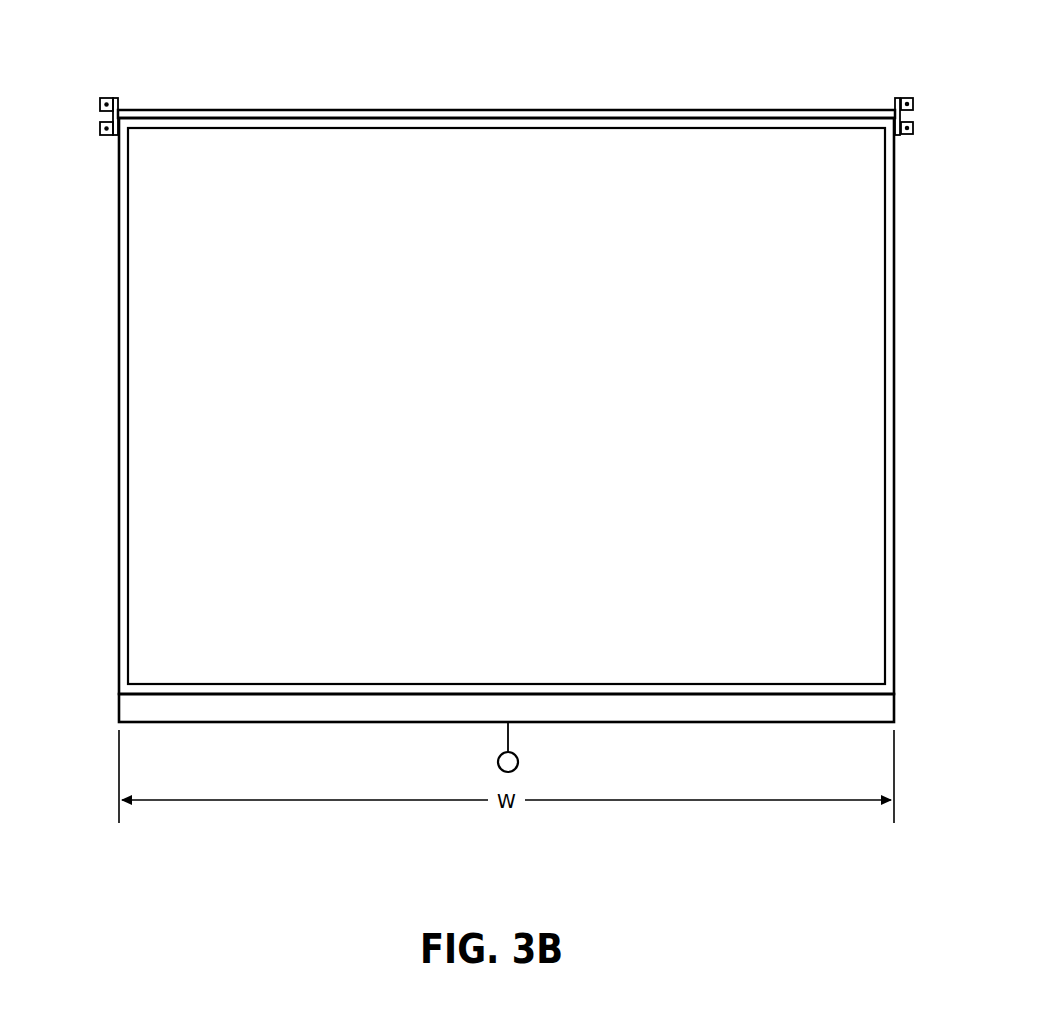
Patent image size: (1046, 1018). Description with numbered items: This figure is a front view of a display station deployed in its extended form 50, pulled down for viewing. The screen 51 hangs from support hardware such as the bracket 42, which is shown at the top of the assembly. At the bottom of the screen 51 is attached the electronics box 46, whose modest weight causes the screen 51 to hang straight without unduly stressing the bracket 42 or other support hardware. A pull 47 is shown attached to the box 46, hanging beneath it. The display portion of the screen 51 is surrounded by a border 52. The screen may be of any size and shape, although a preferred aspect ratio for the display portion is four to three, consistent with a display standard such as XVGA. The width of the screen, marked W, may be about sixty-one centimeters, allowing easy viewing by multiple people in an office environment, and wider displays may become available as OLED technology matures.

The extended form 50 is at (304, 89).
The bracket 42 is at (105, 97).
The border 52 is at (120, 223).
The screen 51 is at (143, 365).
The electronics box 46 is at (118, 708).
The pull 47 is at (508, 733).